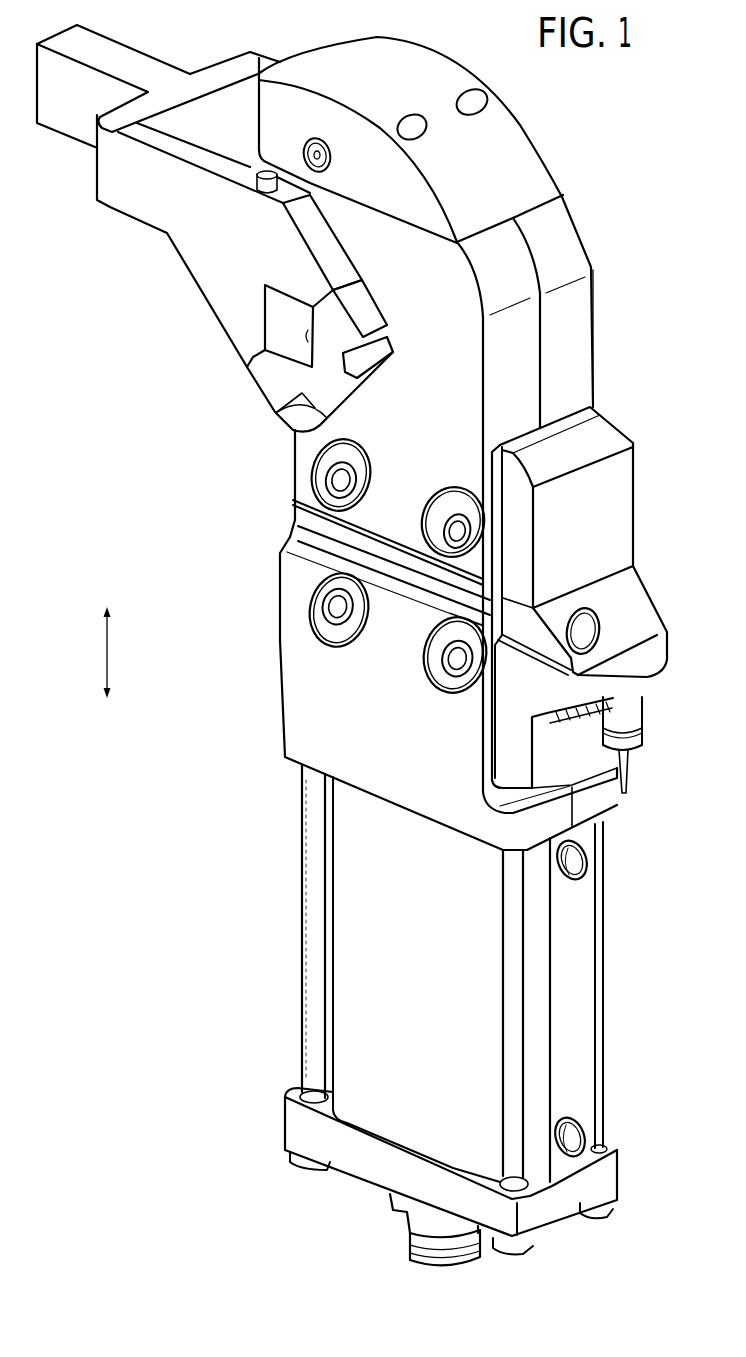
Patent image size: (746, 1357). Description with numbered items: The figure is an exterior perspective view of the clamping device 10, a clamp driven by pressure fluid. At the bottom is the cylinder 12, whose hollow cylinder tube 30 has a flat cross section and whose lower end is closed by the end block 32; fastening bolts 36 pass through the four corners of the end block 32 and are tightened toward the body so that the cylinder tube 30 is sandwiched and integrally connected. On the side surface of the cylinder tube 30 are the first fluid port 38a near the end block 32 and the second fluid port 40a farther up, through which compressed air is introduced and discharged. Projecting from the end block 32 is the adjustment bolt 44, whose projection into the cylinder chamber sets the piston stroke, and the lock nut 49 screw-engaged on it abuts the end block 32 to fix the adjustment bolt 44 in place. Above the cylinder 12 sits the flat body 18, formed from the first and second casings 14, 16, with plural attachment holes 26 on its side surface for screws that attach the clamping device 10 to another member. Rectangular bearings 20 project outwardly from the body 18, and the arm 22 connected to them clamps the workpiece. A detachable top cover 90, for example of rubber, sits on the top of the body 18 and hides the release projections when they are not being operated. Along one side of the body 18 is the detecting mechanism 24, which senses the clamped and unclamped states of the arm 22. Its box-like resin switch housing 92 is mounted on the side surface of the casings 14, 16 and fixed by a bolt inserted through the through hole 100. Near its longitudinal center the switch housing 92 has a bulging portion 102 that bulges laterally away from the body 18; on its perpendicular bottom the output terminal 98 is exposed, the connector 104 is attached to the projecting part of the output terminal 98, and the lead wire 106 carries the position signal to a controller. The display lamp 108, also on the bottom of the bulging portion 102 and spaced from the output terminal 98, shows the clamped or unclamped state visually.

The clamping device 10 is at (653, 112).
The cylinder 12 is at (291, 998).
The first casing 14 is at (295, 702).
The second casing 16 is at (582, 332).
The body 18 is at (592, 225).
The rectangular bearings 20 is at (278, 322).
The arm 22 is at (126, 52).
The detecting mechanism 24 is at (642, 498).
The attachment holes 26 is at (343, 483).
The cylinder tube 30 is at (577, 983).
The end block 32 is at (370, 1170).
The fastening bolts 36 is at (298, 1160).
The first fluid port 38a is at (573, 1136).
The second fluid port 40a is at (582, 868).
The adjustment bolt 44 is at (418, 1260).
The lock nut 49 is at (403, 1217).
The top cover 90 is at (446, 72).
The switch housing 92 is at (610, 435).
The output terminal 98 is at (637, 715).
The through hole 100 is at (592, 620).
The bulging portion 102 is at (660, 665).
The connector 104 is at (637, 737).
The lead wire 106 is at (627, 770).
The display lamp 108 is at (589, 732).